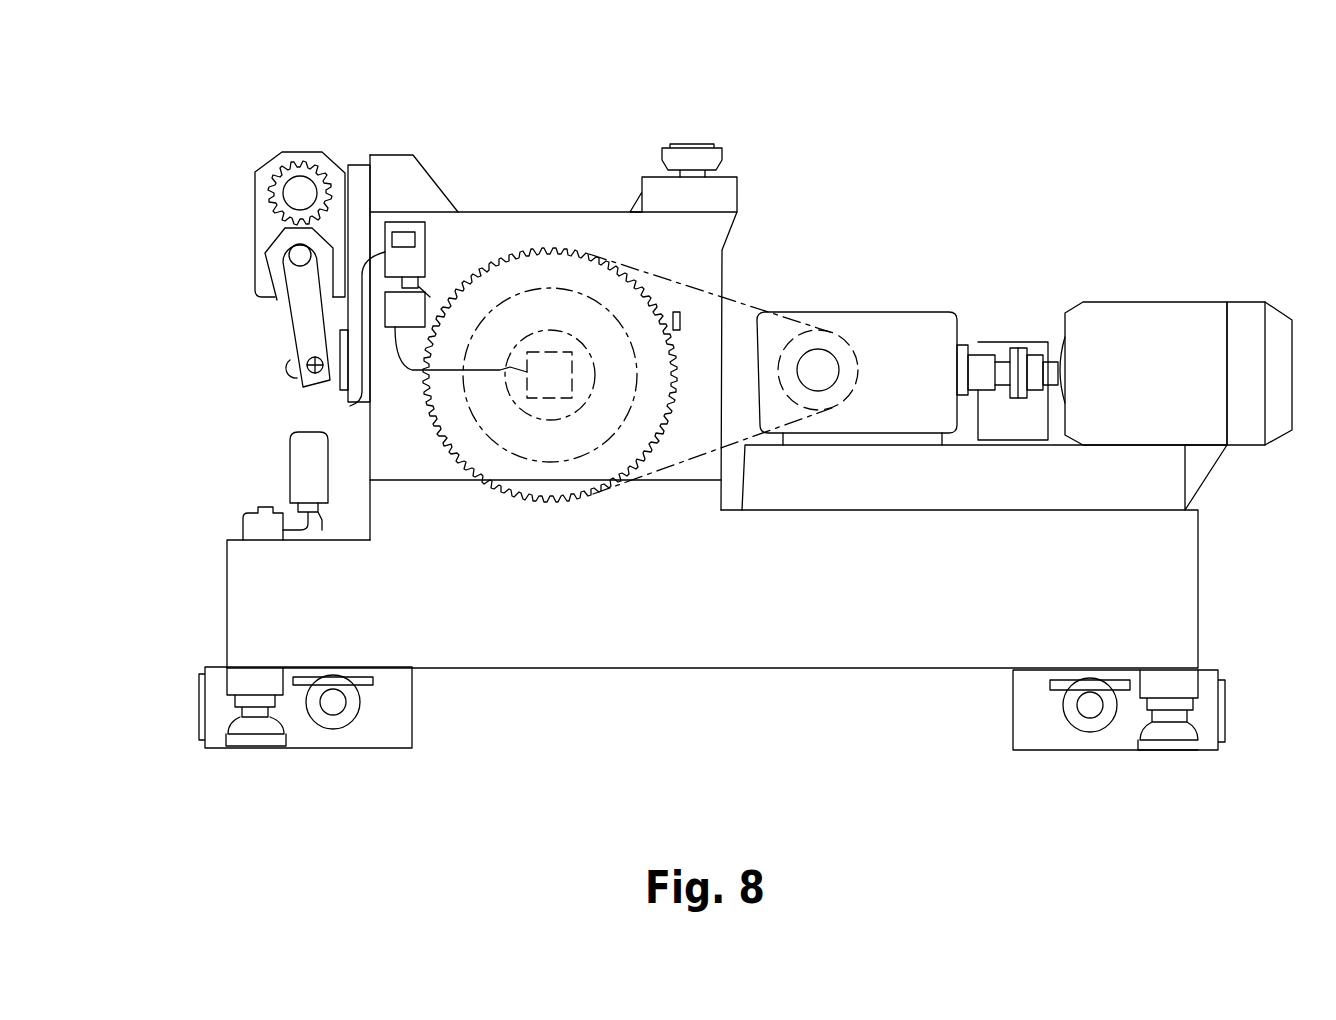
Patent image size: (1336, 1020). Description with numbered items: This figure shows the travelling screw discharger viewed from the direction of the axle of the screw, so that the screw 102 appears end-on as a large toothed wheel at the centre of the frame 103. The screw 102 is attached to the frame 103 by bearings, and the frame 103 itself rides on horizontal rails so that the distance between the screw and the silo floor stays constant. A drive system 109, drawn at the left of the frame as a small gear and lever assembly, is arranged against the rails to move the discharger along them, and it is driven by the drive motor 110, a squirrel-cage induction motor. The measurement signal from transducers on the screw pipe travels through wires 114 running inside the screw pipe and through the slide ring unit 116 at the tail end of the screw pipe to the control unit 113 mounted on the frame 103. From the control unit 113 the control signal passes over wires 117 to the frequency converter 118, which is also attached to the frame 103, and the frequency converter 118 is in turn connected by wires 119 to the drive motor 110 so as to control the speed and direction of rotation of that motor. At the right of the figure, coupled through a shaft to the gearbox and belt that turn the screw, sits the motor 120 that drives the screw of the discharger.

The screw 102 is at (549, 275).
The frame 103 is at (710, 242).
The drive system 109 is at (227, 208).
The drive motor 110 is at (290, 364).
The control unit 113 is at (428, 300).
The wires 114 is at (412, 372).
The slide ring unit 116 is at (557, 368).
The wires 117 is at (427, 303).
The frequency converter 118 is at (390, 222).
The wires 119 is at (350, 404).
The motor 120 is at (1165, 316).